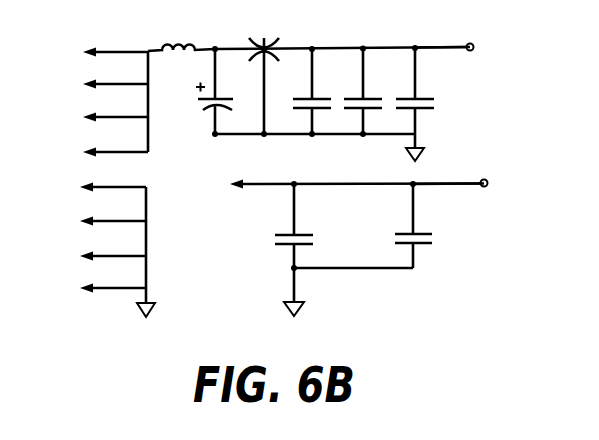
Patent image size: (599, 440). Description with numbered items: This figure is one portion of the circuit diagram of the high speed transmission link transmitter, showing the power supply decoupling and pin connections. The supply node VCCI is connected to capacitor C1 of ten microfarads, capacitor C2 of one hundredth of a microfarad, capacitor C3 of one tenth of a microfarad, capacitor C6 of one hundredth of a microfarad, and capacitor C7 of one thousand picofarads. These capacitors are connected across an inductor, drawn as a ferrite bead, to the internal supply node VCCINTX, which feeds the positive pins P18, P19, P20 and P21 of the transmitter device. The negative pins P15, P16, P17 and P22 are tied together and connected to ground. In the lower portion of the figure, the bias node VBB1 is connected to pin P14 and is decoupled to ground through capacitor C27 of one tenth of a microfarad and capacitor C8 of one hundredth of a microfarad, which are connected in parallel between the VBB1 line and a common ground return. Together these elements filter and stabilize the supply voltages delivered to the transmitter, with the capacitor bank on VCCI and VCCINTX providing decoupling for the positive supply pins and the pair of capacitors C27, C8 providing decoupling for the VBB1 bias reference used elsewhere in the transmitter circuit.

The capacitor C1 is at (203, 91).
The capacitor C2 is at (263, 76).
The capacitor C3 is at (315, 91).
The capacitor C6 is at (366, 92).
The capacitor C7 is at (419, 98).
The capacitor C8 is at (426, 226).
The capacitor C27 is at (310, 243).
The pin P14 is at (340, 186).
The negative pin P15 is at (96, 187).
The negative pin P16 is at (96, 222).
The negative pin P17 is at (96, 257).
The positive pin P18 is at (97, 46).
The positive pin P19 is at (97, 78).
The positive pin P20 is at (97, 111).
The positive pin P21 is at (97, 146).
The negative pin P22 is at (96, 290).
The supply node VCC1 VCCI is at (466, 48).
The bias node VBB1 is at (475, 184).
The internal transmitter supply node VCCINTX is at (309, 37).